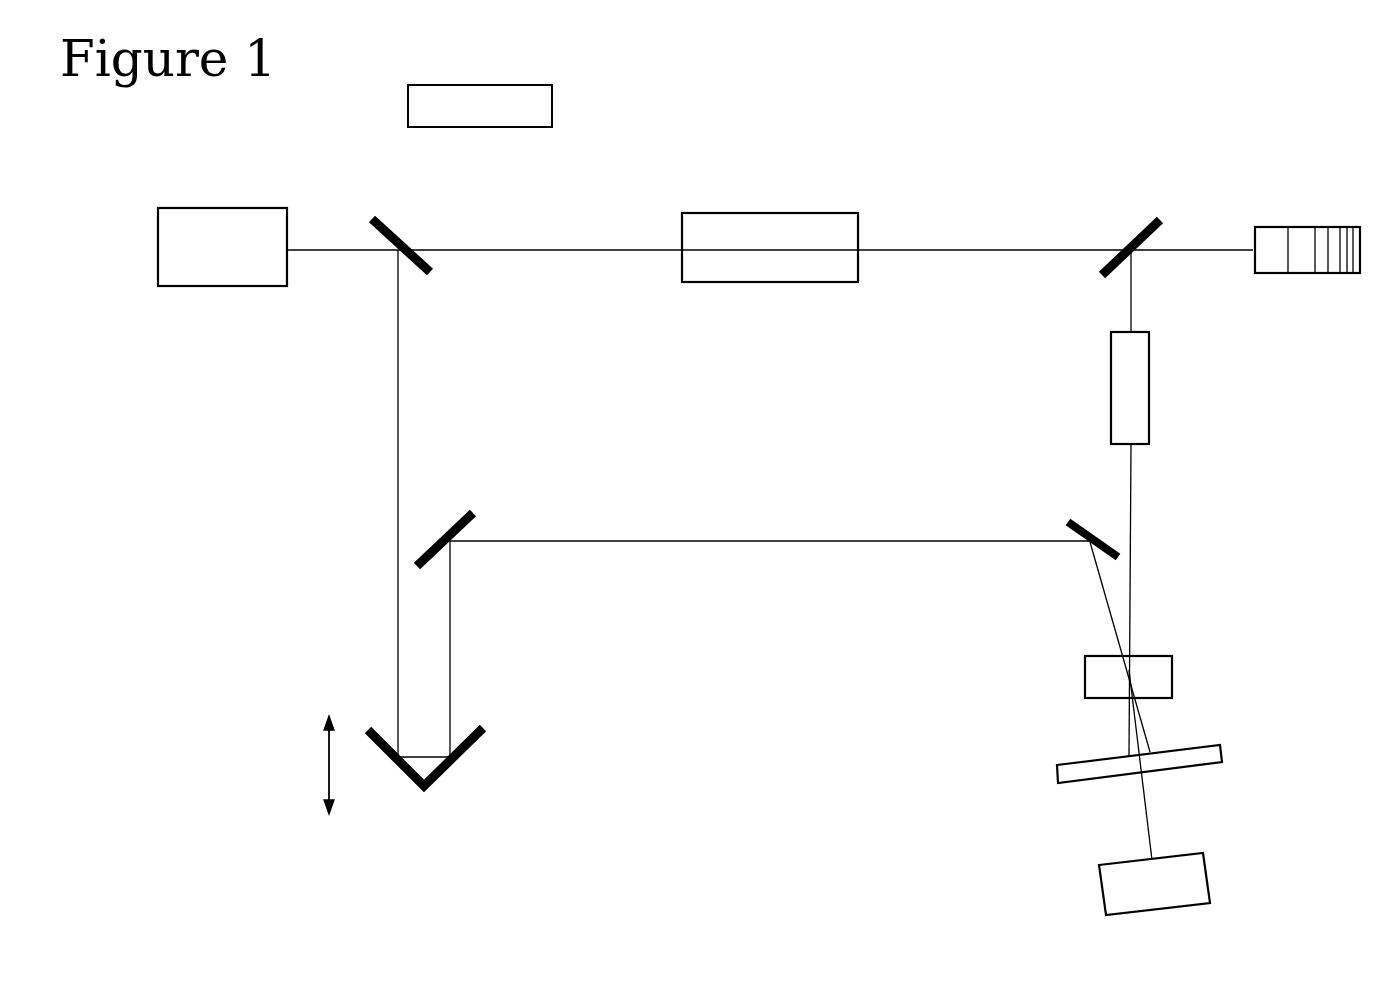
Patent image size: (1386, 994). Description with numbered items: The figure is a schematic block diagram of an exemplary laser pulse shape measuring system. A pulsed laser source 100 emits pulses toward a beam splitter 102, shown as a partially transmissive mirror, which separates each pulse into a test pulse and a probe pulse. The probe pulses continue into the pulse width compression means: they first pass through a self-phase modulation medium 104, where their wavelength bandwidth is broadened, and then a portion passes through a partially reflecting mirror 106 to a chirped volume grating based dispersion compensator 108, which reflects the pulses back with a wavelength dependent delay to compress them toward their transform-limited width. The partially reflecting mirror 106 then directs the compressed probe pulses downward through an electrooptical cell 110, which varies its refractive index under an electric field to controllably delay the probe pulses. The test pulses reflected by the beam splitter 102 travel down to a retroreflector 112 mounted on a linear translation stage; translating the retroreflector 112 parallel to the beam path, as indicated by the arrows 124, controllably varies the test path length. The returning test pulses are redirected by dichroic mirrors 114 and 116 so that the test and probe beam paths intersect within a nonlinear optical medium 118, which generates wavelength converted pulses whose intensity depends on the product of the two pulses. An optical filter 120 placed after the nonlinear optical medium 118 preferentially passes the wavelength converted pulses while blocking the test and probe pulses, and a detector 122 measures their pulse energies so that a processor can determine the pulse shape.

The pulsed laser source 100 is at (212, 286).
The beam splitter 102 is at (382, 220).
The self-phase modulation medium 104 is at (768, 213).
The partially reflecting mirror 106 is at (1150, 222).
The dispersion compensator 108 is at (1302, 225).
The electrooptical cell 110 is at (1149, 388).
The retroreflector 112 is at (430, 785).
The dichroic mirror 114 is at (463, 517).
The dichroic mirror 116 is at (1068, 522).
The nonlinear optical medium 118 is at (1085, 678).
The optical filter 120 is at (1220, 748).
The detector 122 is at (1099, 883).
The arrows 124 is at (329, 767).